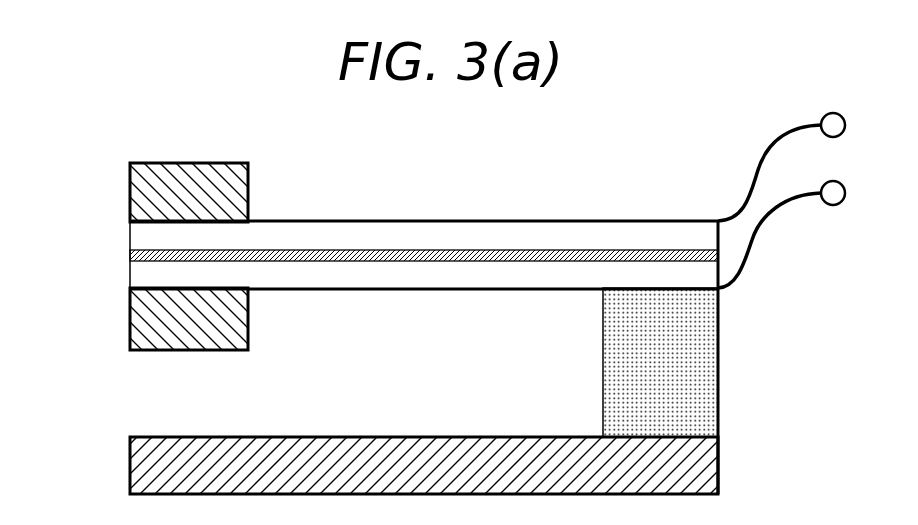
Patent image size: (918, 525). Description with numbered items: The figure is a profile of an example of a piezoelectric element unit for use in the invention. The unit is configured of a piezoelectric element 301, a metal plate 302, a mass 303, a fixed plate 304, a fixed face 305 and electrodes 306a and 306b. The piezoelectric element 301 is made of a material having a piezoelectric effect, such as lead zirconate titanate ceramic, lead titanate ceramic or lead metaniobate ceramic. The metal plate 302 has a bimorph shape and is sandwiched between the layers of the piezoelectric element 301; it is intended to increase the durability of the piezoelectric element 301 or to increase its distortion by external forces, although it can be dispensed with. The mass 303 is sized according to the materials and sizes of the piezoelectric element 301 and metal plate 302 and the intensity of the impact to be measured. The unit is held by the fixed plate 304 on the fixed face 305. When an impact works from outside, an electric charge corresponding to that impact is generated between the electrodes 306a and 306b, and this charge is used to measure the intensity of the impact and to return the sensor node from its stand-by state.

The piezoelectric element 301 is at (488, 228).
The metal plate 302 is at (130, 255).
The mass 303 is at (130, 194).
The fixed plate 304 is at (706, 363).
The fixed face 305 is at (708, 464).
The electrode 306a is at (833, 113).
The electrode 306b is at (836, 205).